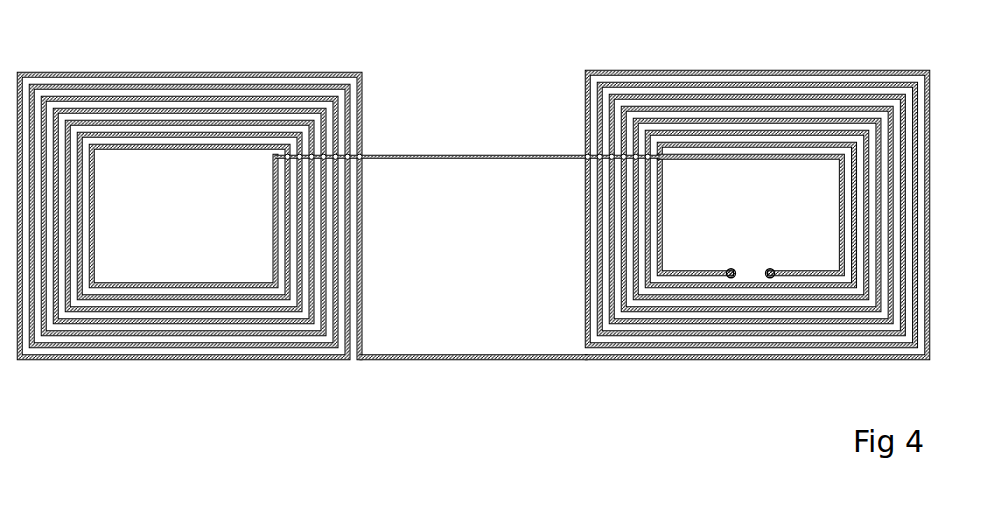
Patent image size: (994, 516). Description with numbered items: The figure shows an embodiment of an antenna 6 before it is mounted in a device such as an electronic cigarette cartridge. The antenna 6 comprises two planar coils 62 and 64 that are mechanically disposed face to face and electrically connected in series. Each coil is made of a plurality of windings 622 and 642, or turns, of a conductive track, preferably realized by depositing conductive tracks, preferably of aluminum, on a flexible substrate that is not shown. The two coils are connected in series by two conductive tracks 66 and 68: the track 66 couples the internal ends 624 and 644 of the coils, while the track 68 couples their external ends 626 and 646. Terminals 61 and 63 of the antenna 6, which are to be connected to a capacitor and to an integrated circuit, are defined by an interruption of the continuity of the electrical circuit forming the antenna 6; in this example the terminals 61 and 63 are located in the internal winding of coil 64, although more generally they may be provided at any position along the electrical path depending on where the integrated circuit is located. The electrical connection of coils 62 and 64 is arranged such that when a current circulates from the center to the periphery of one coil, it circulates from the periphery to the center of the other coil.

The antenna 6 is at (224, 418).
The planar coil 62 is at (182, 66).
The windings 622 is at (122, 324).
The internal end 624 is at (267, 155).
The external end 626 is at (360, 363).
The planar coil 64 is at (740, 66).
The windings 642 is at (670, 328).
The internal end 644 is at (695, 158).
The external end 646 is at (585, 351).
The conductive track 66 is at (477, 153).
The conductive track 68 is at (432, 352).
The terminal 61 is at (731, 268).
The terminal 63 is at (770, 268).